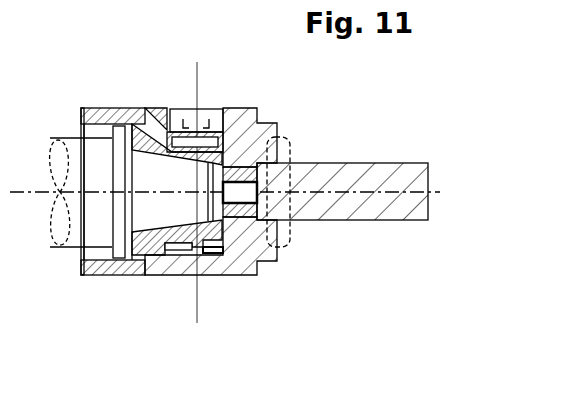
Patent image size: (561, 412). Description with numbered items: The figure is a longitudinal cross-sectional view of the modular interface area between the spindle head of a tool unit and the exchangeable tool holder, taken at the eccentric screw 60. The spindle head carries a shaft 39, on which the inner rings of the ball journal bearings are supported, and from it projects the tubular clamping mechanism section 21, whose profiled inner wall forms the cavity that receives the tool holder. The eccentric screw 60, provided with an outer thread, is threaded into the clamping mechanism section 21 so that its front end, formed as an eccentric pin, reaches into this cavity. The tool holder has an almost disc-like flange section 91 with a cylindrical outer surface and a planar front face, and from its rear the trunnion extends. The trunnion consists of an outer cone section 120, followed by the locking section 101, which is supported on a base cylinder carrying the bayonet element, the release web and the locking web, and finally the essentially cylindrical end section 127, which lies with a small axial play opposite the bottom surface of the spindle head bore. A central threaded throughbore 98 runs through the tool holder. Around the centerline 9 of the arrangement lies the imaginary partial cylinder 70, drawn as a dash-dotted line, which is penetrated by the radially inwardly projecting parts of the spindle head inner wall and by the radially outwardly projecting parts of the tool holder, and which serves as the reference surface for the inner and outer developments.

The partial cylinder 70 is at (105, 138).
The clamping mechanism section 21 is at (157, 108).
The eccentric screw 60 is at (202, 108).
The shaft 39 is at (327, 178).
The flange section 91 is at (98, 276).
The outer cone section 120 is at (153, 257).
The locking section 101 is at (200, 304).
The end section 127 is at (235, 220).
The threaded throughbore 98 is at (250, 195).
The centerline 9 is at (310, 190).